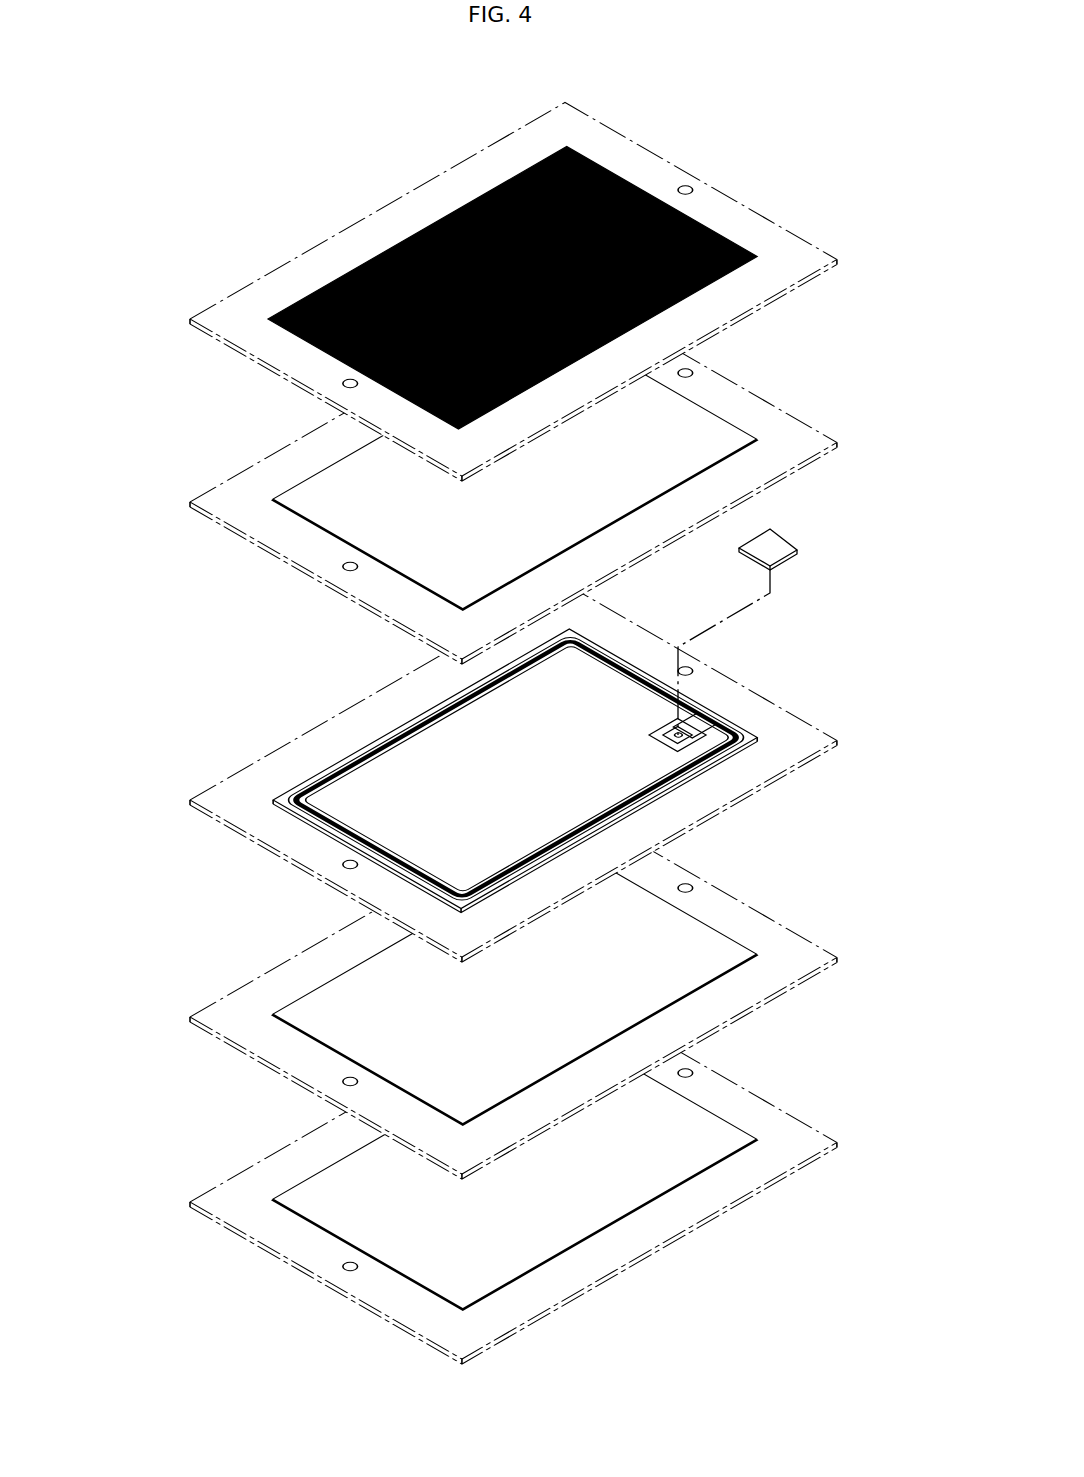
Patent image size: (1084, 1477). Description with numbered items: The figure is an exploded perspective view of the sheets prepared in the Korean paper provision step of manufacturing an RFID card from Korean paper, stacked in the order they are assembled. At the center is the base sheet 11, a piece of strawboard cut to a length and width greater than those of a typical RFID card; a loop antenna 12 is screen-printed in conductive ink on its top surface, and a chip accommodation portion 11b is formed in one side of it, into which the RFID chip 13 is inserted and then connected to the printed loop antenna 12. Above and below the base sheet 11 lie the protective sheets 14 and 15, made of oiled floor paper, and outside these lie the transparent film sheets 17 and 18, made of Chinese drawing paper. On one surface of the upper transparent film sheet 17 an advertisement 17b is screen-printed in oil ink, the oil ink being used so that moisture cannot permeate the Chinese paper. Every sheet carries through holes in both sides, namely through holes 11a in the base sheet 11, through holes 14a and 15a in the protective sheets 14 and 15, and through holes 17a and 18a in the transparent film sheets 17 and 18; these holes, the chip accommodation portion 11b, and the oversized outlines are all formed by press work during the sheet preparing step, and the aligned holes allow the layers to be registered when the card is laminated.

The base sheet 11 is at (491, 773).
The through hole 11a is at (687, 670).
The chip accommodation portion 11b is at (733, 753).
The loop antenna 12 is at (377, 735).
The RFID chip 13 is at (783, 543).
The protective sheet 14 is at (496, 475).
The through hole 14a is at (690, 368).
The protective sheet 15 is at (462, 990).
The through hole 15a is at (347, 1082).
The transparent film sheet 17 is at (502, 264).
The through hole 17a is at (688, 184).
The advertisement 17b is at (603, 162).
The transparent film sheet 18 is at (451, 1175).
The through hole 18a is at (347, 1262).